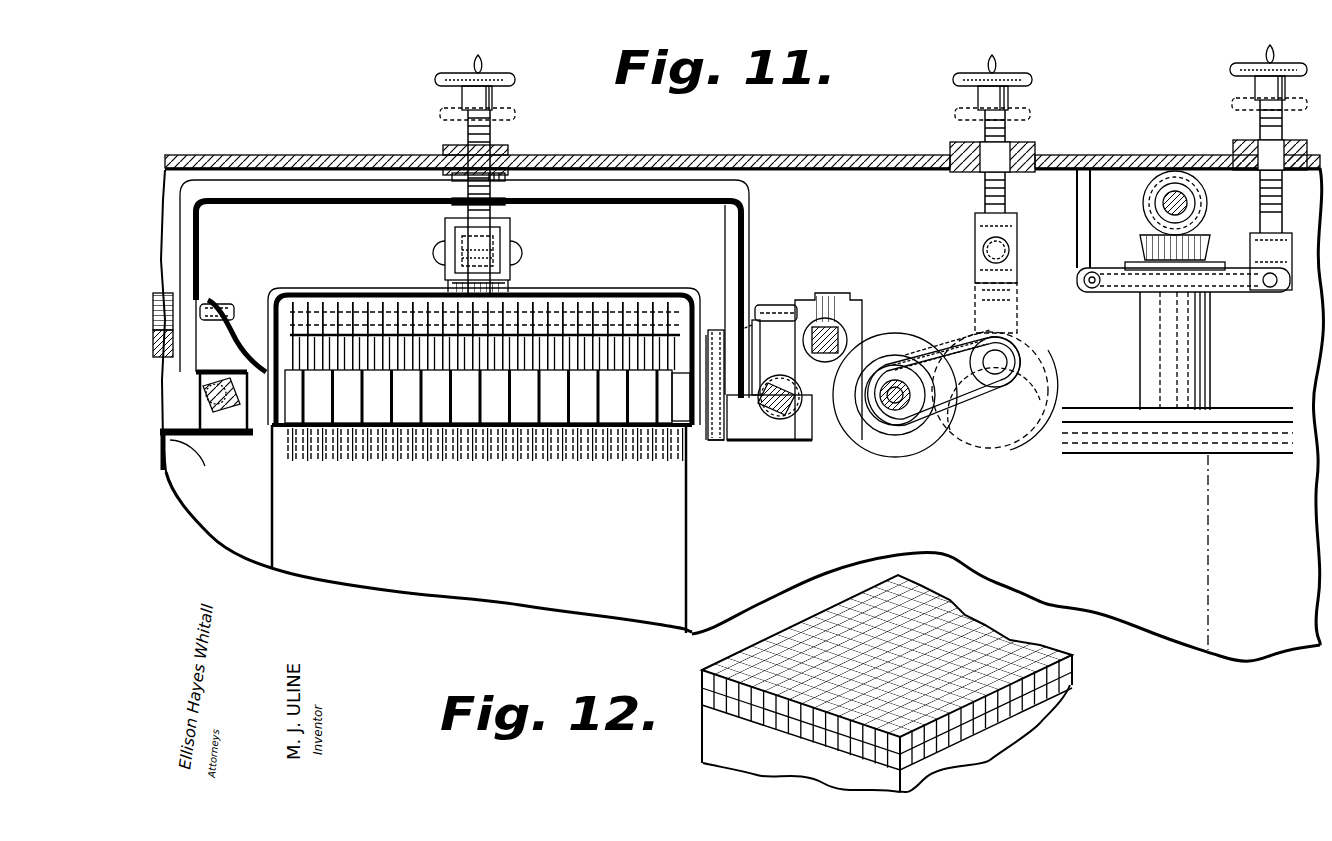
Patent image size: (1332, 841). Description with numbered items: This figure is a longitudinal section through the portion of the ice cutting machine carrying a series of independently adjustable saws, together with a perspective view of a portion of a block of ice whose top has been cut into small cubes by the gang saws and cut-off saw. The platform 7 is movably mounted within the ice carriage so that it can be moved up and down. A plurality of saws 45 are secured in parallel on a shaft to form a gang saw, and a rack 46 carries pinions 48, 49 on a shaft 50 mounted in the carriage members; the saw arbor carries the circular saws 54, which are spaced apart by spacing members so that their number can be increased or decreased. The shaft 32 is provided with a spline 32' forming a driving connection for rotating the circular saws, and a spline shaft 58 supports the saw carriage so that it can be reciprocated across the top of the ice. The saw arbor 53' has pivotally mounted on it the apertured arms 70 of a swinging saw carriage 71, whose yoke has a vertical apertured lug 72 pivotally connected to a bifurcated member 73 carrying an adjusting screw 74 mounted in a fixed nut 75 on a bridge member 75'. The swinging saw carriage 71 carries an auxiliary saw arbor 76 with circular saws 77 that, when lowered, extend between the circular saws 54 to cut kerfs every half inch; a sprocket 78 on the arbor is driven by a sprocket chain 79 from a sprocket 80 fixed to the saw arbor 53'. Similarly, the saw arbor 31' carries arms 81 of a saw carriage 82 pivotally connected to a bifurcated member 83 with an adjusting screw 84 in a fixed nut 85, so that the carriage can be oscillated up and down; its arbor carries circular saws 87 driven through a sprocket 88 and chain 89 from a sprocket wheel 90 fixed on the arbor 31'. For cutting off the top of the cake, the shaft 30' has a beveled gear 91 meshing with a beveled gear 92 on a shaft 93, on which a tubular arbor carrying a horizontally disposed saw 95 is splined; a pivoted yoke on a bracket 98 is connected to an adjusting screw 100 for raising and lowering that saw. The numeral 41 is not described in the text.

The platform 7 is at (345, 152).
The shaft 30' is at (1207, 194).
The saw arbor 31' is at (780, 433).
The shaft 32 is at (767, 404).
The spline 32' is at (768, 443).
The bearing block 41 is at (203, 393).
The saws 45 is at (895, 395).
The rack 46 is at (838, 328).
The pinion 48 is at (828, 296).
The pinion 49 is at (168, 300).
The shaft 50 is at (778, 305).
The saw arbor 53' is at (482, 436).
The circular saws 54 is at (495, 445).
The spline shaft 58 is at (228, 438).
The apertured arms 70 is at (749, 262).
The swinging saw carriage 71 is at (570, 292).
The vertical apertured lug 72 is at (495, 255).
The bifurcated member 73 is at (510, 222).
The adjusting screw 74 is at (468, 128).
The fixed nut 75 is at (446, 200).
The bridge member 75' is at (703, 298).
The auxiliary saw arbor 76 is at (655, 345).
The circular saws 77 is at (310, 300).
The sprocket 78 is at (722, 330).
The sprocket chain 79 is at (740, 395).
The sprocket 80 is at (716, 440).
The arms 81 is at (935, 420).
The saw carriage 82 is at (1015, 300).
The bifurcated member 83 is at (985, 228).
The adjusting screw 84 is at (985, 190).
The fixed nut 85 is at (1035, 146).
The circular saws 87 is at (1035, 440).
The sprocket 88 is at (1003, 355).
The chain 89 is at (935, 345).
The sprocket wheel 90 is at (895, 395).
The beveled gear 91 is at (1145, 196).
The beveled gear 92 is at (1200, 232).
The shaft 93 is at (1210, 410).
The saw 95 is at (1136, 456).
The bracket 98 is at (1077, 193).
The adjusting screw 100 is at (1258, 120).